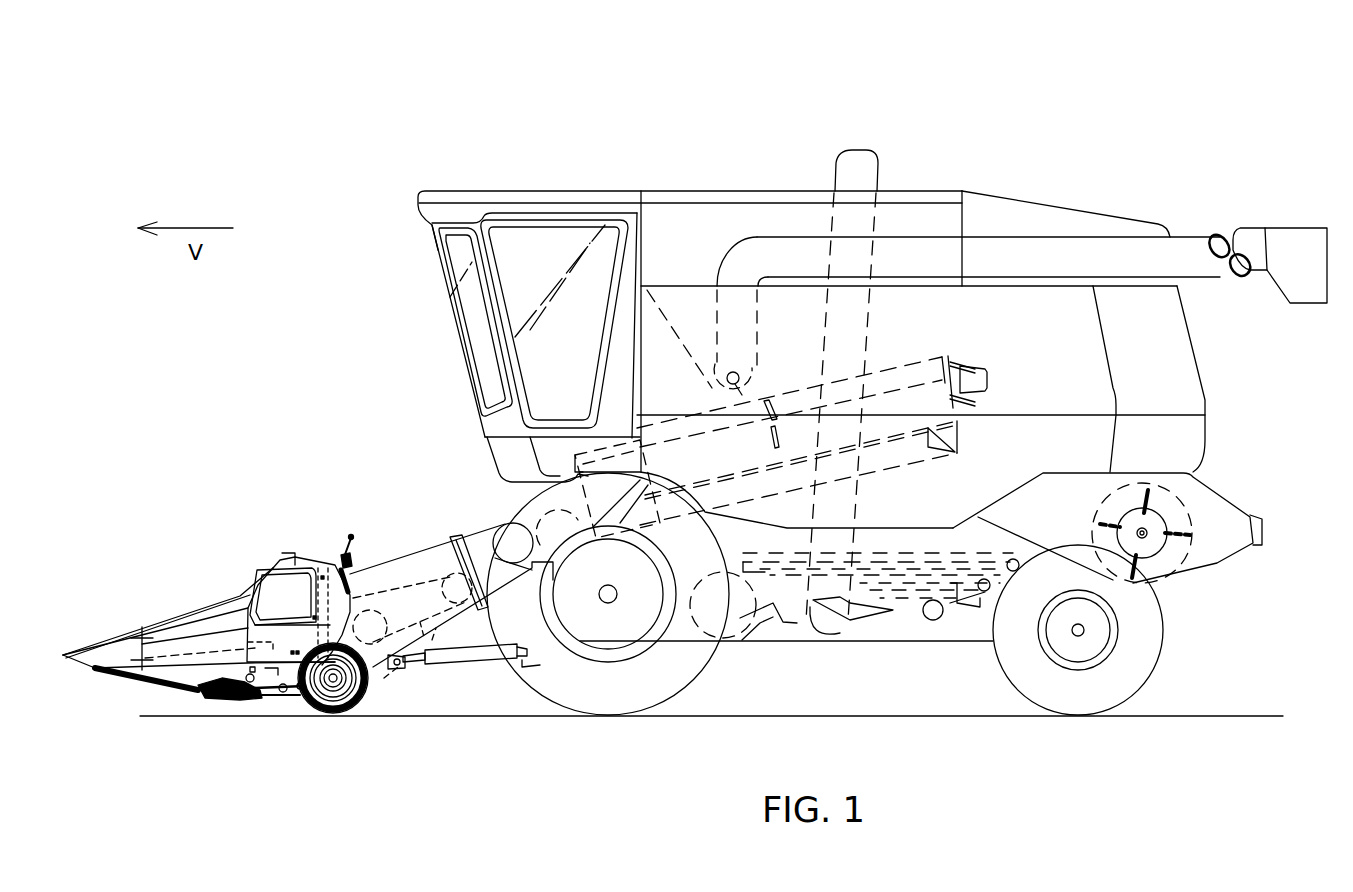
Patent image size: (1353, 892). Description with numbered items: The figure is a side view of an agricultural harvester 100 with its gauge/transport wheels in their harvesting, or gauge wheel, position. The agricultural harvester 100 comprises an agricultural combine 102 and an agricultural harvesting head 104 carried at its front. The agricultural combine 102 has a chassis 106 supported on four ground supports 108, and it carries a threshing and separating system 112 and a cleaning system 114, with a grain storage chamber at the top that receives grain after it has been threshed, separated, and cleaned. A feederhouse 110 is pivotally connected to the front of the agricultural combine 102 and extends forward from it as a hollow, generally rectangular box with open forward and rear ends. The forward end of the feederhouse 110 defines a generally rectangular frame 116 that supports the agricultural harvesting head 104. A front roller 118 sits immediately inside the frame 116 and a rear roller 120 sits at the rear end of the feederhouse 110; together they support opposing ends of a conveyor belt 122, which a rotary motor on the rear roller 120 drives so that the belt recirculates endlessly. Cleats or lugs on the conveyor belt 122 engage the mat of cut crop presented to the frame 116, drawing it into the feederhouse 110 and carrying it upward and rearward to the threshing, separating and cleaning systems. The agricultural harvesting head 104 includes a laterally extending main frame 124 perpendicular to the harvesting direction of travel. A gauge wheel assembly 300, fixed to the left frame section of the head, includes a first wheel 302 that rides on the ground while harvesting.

The agricultural harvester 100 is at (410, 66).
The agricultural combine 102 is at (717, 190).
The agricultural harvesting head 104 is at (198, 608).
The chassis 106 is at (913, 642).
The ground supports 108 is at (683, 694).
The feederhouse 110 is at (433, 540).
The threshing and separating system 112 is at (912, 360).
The cleaning system 114 is at (903, 535).
The frame 116 is at (353, 598).
The front roller 118 is at (384, 678).
The rear roller 120 is at (453, 630).
The conveyor belt 122 is at (432, 640).
The main frame 124 is at (307, 540).
The gauge wheel assembly 300 is at (302, 706).
The first wheel 302 is at (325, 716).